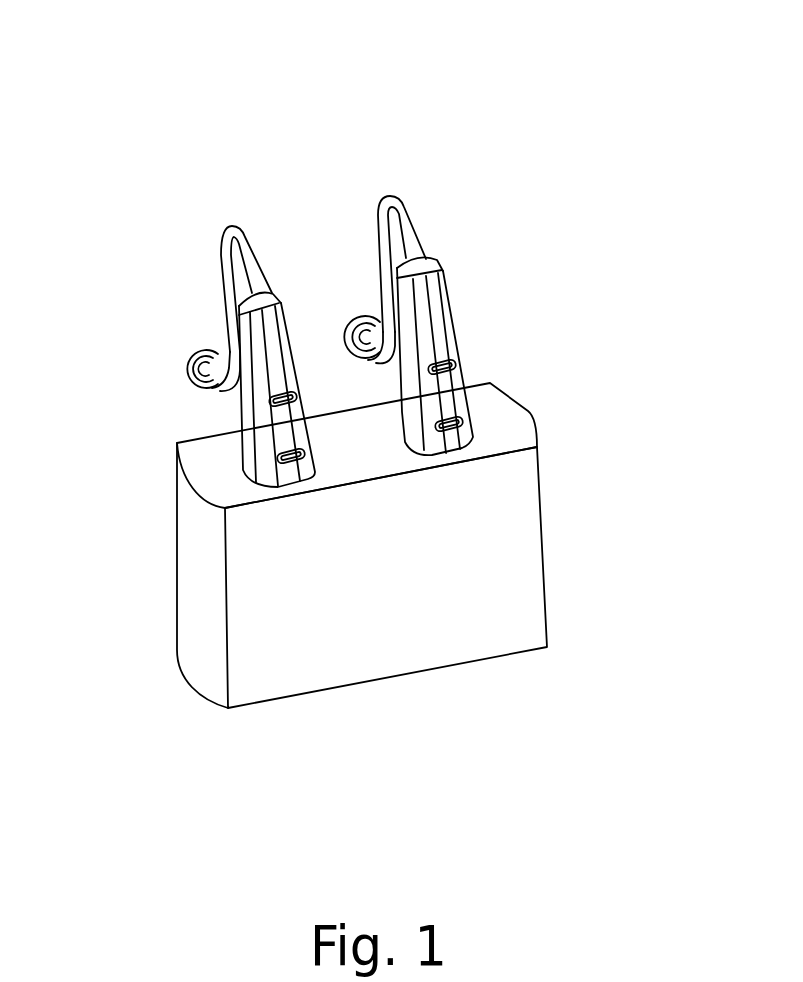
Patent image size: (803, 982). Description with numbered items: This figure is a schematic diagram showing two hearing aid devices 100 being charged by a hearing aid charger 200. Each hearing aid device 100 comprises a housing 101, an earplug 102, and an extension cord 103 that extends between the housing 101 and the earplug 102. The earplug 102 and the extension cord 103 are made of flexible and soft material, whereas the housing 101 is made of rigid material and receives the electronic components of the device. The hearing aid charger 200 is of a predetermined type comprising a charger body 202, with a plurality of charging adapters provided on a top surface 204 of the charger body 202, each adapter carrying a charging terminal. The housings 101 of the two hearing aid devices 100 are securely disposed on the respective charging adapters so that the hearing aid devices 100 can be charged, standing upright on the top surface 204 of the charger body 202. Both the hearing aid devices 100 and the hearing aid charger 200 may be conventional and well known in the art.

The hearing aid device 100 is at (416, 229).
The housing 101 is at (433, 308).
The earplug 102 is at (353, 318).
The extension cord 103 is at (398, 212).
The hearing aid charger 200 is at (370, 544).
The charger body 202 is at (323, 617).
The top surface 204 is at (537, 397).